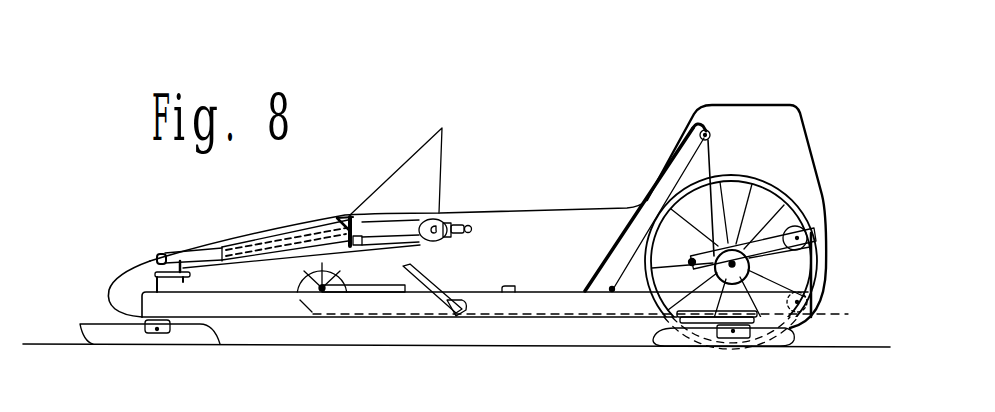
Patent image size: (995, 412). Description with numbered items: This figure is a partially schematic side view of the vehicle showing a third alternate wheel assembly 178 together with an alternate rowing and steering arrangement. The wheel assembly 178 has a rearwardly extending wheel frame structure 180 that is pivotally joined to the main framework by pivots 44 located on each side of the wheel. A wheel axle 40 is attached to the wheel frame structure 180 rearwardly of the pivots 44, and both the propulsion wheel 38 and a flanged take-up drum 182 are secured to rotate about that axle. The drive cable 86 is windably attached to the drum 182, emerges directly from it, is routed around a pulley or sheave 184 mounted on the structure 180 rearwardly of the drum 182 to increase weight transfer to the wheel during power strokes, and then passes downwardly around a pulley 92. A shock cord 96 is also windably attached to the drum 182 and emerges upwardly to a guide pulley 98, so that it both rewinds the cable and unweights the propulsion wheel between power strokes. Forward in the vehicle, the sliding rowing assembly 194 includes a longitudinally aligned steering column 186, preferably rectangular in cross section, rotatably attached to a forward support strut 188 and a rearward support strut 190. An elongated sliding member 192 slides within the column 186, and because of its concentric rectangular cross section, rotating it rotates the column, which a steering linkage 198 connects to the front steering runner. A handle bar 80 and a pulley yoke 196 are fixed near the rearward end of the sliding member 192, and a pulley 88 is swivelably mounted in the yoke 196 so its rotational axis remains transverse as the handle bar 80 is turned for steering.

The propulsion wheel 38 is at (762, 262).
The wheel axle 40 is at (750, 319).
The pivots 44 is at (696, 243).
The handle bar 80 is at (488, 239).
The drive cable 86 is at (494, 216).
The pulley 88 is at (473, 202).
The pulley 92 is at (591, 315).
The shock cord 96 is at (742, 196).
The guide pulley 98 is at (739, 110).
The third alternate wheel assembly 178 is at (766, 152).
The wheel frame structure 180 is at (660, 208).
The flanged take-up drum 182 is at (664, 296).
The pulley or sheave 184 is at (825, 227).
The steering column 186 is at (166, 229).
The forward support strut 188 is at (124, 238).
The rearward support strut 190 is at (292, 227).
The sliding member 192 is at (358, 209).
The sliding rowing assembly 194 is at (375, 171).
The pulley yoke 196 is at (496, 208).
The steering linkage 198 is at (214, 276).